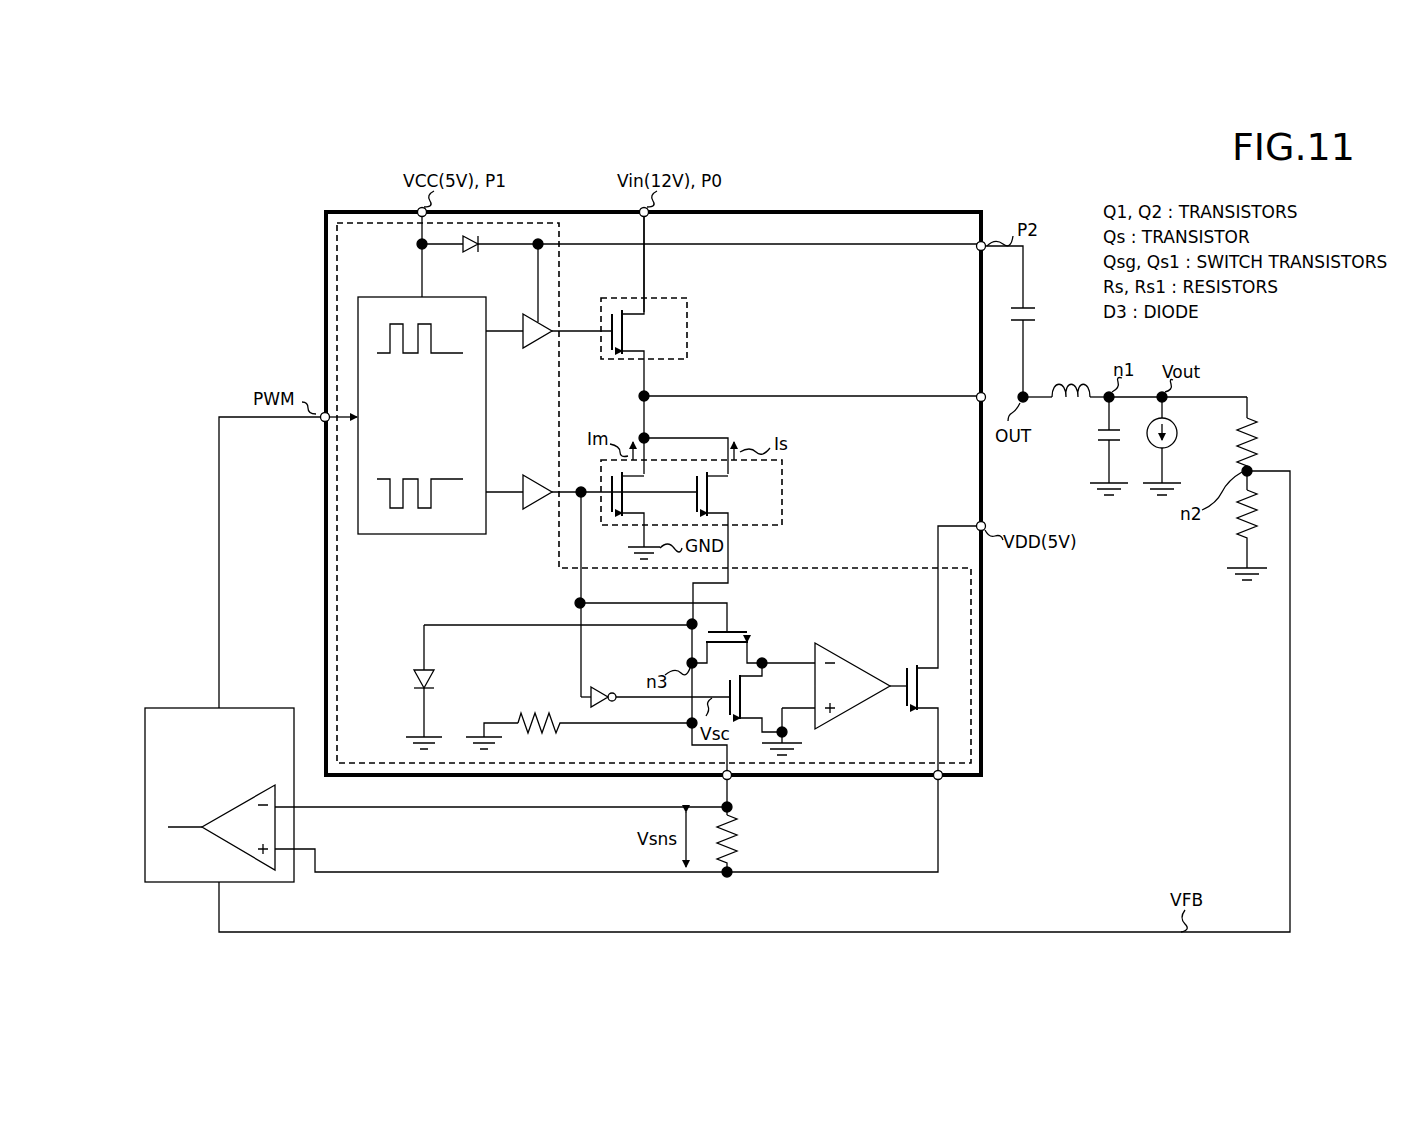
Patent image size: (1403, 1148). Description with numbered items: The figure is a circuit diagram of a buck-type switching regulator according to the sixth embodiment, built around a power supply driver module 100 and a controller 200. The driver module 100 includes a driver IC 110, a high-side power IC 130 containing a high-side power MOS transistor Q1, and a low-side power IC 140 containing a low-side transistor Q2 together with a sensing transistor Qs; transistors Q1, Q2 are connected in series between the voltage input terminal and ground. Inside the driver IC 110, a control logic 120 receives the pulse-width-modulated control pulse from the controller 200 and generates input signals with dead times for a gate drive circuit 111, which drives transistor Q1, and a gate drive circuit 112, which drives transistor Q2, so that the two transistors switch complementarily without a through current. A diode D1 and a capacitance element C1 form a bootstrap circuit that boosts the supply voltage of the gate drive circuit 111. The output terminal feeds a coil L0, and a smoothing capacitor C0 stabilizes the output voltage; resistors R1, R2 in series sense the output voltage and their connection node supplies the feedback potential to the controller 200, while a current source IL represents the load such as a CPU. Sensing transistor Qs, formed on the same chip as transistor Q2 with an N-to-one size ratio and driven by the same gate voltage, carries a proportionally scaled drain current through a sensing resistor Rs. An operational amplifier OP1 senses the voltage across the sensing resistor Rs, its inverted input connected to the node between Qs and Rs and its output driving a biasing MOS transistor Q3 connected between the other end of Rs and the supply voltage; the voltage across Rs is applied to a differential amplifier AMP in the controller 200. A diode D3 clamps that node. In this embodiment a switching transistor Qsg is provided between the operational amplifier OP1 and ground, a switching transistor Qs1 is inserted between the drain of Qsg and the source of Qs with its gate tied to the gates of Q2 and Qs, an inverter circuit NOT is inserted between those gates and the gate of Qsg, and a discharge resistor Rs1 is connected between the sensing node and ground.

The power supply driver module 100 is at (324, 229).
The driver IC 110 is at (336, 273).
The control logic 120 is at (358, 317).
The gate drive circuit 111 is at (528, 350).
The gate drive circuit 112 is at (530, 475).
The high-side power IC 130 is at (678, 306).
The low-side power IC 140 is at (725, 542).
The controller 200 is at (219, 768).
The transistor Q1 is at (644, 318).
The transistor Q2 is at (644, 478).
The sensing transistor Qs is at (728, 478).
The switching transistor Qsg is at (762, 676).
The switching transistor Qs1 is at (768, 628).
The biasing MOS transistor Q3 is at (938, 670).
The diode D1 is at (470, 252).
The diode D3 is at (412, 668).
The sensing resistor Rs is at (742, 836).
The resistor Rs1 is at (526, 708).
The resistor R1 is at (1258, 420).
The resistor R2 is at (1234, 532).
The smoothing capacitor C0 is at (1100, 440).
The capacitance element C1 is at (1028, 306).
The coil L0 is at (1080, 362).
The current source IL is at (1178, 436).
The operational amplifier OP1 is at (848, 716).
The inverter circuit NOT is at (605, 686).
The differential amplifier AMP is at (243, 804).